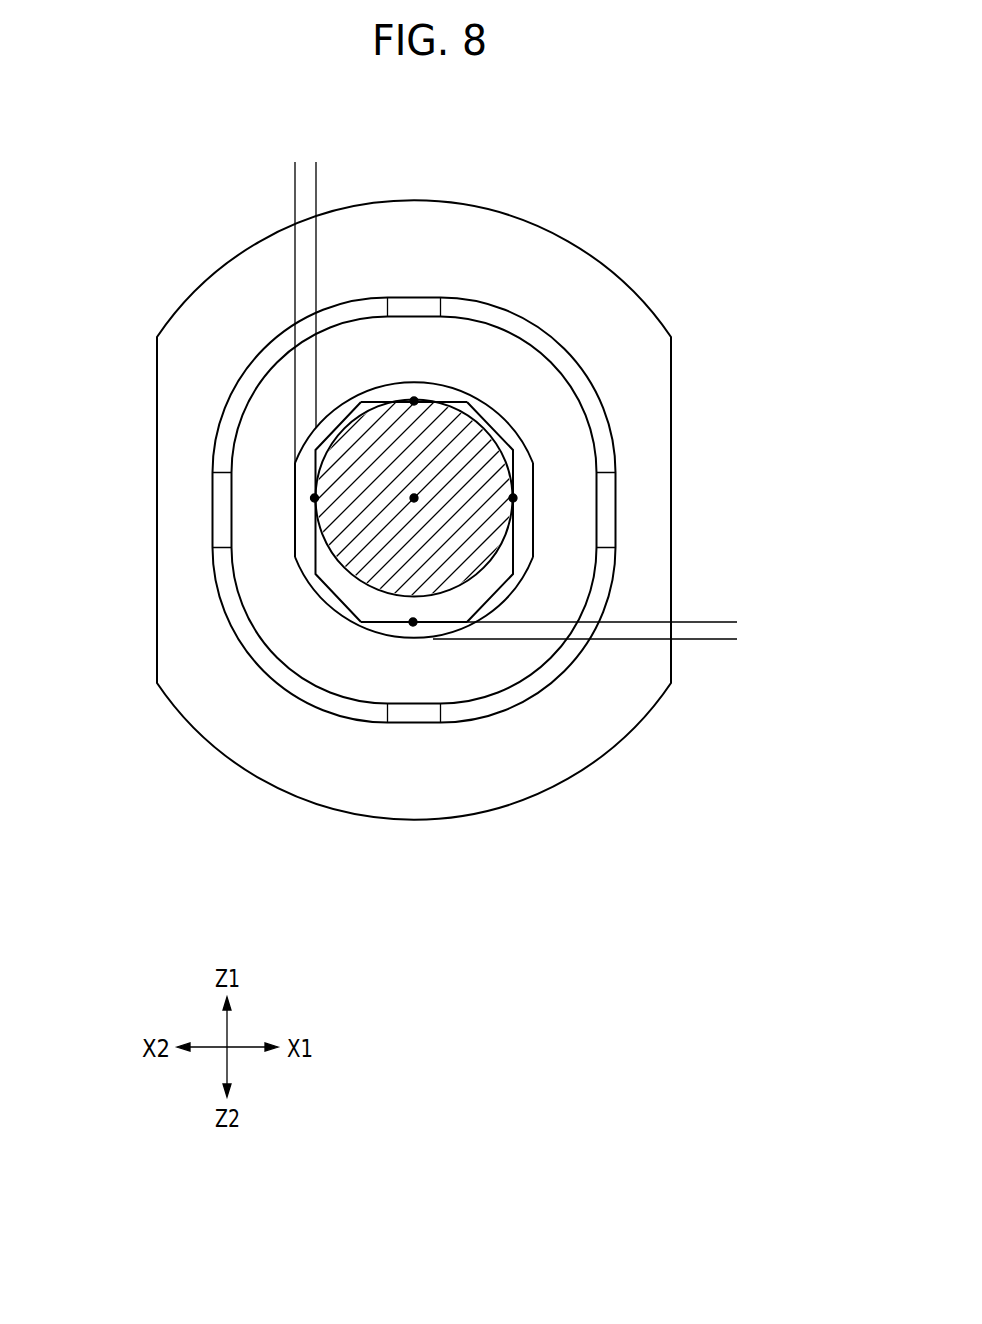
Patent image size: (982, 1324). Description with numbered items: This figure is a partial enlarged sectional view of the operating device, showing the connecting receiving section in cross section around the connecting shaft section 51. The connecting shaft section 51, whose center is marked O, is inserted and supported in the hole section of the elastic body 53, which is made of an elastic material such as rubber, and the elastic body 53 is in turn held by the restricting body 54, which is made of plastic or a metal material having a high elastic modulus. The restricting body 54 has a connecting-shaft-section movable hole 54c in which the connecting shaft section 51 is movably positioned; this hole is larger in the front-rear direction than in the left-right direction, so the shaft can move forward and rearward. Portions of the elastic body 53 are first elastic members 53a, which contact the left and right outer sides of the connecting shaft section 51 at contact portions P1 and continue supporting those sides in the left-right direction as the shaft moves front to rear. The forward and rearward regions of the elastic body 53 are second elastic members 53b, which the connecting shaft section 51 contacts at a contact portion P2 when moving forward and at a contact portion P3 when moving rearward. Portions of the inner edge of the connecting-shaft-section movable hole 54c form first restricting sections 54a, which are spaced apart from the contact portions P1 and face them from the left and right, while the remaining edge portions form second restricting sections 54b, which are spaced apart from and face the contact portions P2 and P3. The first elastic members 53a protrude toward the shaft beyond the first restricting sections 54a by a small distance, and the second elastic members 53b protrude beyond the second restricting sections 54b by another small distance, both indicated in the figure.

The connecting shaft section 51 is at (475, 440).
The elastic body 53 is at (418, 516).
The first elastic member 53a is at (303, 535).
The second elastic member 53b is at (420, 378).
The restricting body 54 is at (437, 499).
The first restricting section 54a is at (298, 490).
The second restricting section 54b is at (403, 380).
The connecting-shaft-section movable hole 54c is at (390, 380).
The contact portion P1 is at (314, 498).
The contact portion P2 is at (414, 401).
The contact portion P3 is at (413, 623).
The center of shaft O is at (414, 498).